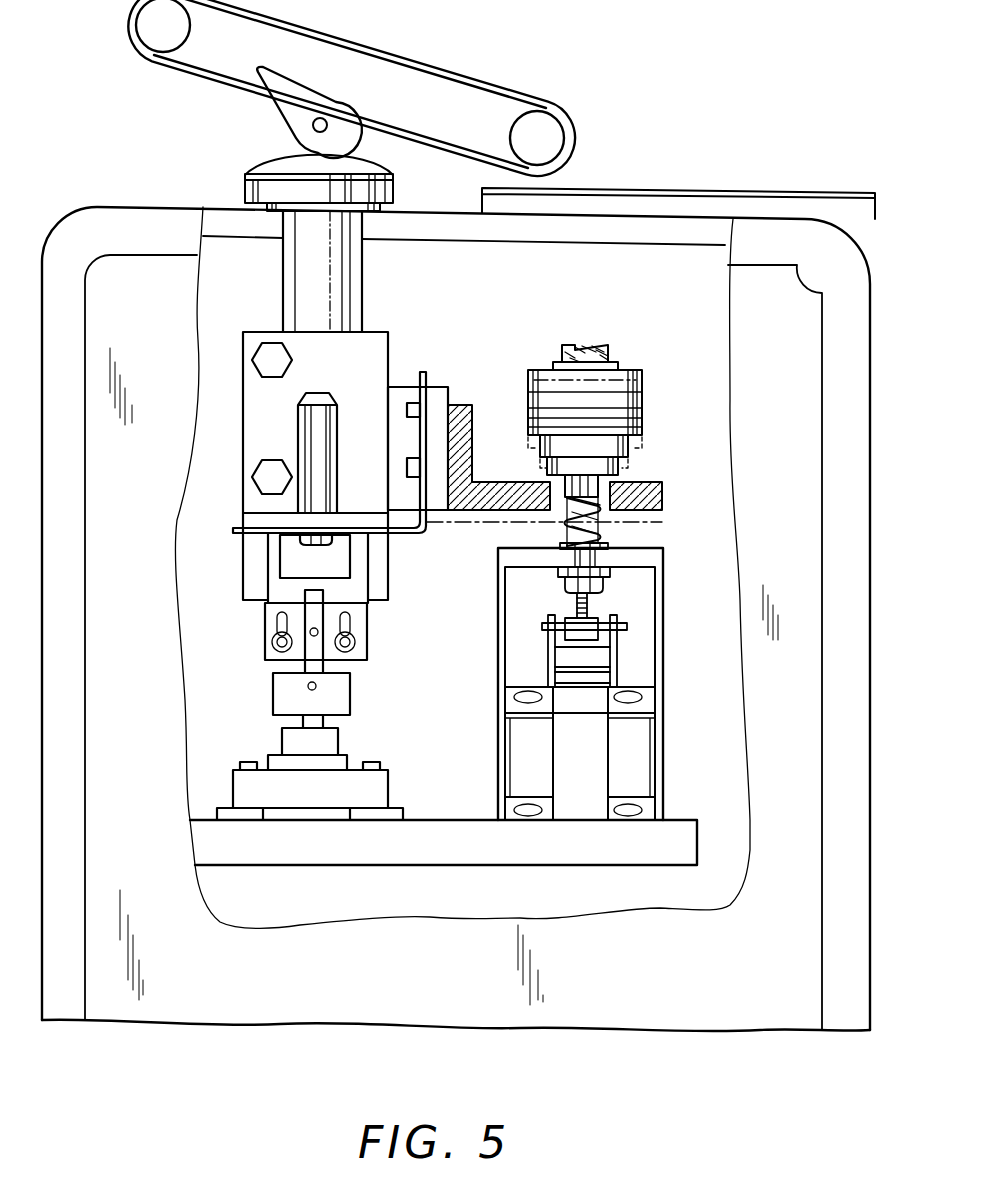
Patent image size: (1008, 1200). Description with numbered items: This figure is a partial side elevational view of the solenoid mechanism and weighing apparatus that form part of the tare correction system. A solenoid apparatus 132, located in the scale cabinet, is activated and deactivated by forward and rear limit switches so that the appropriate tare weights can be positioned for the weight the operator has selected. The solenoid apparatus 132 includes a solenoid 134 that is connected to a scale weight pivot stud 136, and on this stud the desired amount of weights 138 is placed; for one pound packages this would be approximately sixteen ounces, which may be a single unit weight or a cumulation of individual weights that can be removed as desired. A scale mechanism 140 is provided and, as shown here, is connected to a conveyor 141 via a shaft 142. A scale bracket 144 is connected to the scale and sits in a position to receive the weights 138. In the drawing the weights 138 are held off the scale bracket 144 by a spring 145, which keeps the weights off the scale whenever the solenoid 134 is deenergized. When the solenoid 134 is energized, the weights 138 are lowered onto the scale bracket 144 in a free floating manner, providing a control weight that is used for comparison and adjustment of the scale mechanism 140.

The solenoid apparatus 132 is at (669, 647).
The solenoid 134 is at (650, 770).
The scale weight pivot stud 136 is at (567, 528).
The weights 138 is at (641, 405).
The scale mechanism 140 is at (260, 647).
The conveyor 141 is at (482, 83).
The shaft 142 is at (295, 276).
The scale bracket 144 is at (465, 432).
The spring 145 is at (633, 487).